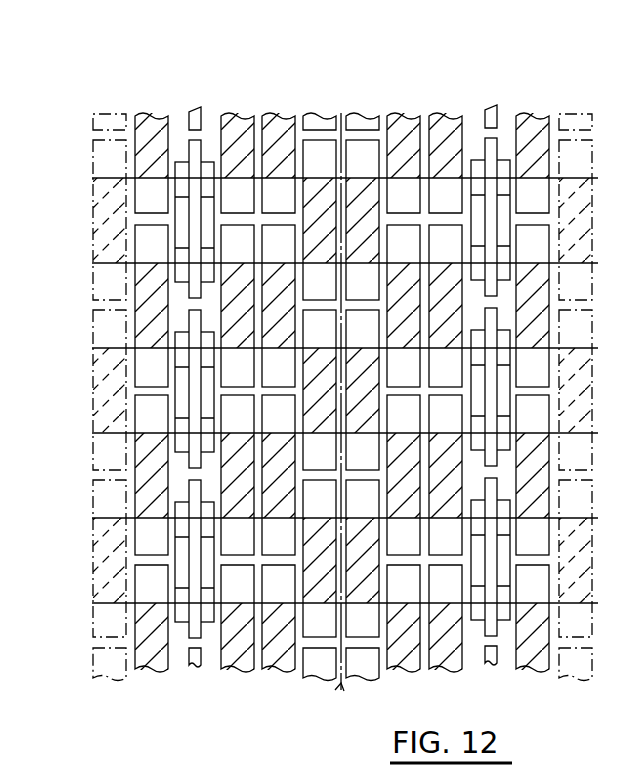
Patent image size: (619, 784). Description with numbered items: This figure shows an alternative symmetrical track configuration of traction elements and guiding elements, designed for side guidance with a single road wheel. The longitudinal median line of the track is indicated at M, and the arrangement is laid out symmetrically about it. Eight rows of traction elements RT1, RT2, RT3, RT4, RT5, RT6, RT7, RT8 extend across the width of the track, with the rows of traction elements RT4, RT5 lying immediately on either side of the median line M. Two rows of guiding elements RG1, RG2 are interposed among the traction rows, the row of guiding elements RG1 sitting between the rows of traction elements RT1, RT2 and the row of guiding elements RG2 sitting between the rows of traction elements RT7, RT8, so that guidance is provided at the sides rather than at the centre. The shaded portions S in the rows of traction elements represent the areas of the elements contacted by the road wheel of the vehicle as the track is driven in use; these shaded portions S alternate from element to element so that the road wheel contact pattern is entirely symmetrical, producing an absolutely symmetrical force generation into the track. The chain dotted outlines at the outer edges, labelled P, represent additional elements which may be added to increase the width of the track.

The row of traction elements RT1 is at (152, 111).
The row of traction elements RT2 is at (238, 110).
The row of traction elements RT3 is at (280, 111).
The row of traction elements RT4 is at (320, 111).
The row of traction elements RT5 is at (355, 108).
The row of traction elements RT6 is at (403, 112).
The row of traction elements RT7 is at (445, 108).
The row of traction elements RT8 is at (537, 107).
The row of guiding elements RG1 is at (193, 100).
The row of guiding elements RG2 is at (490, 106).
The shaded portions S is at (157, 157).
The phantom tooth ring P is at (108, 272).
The longitudinal median line M is at (343, 418).